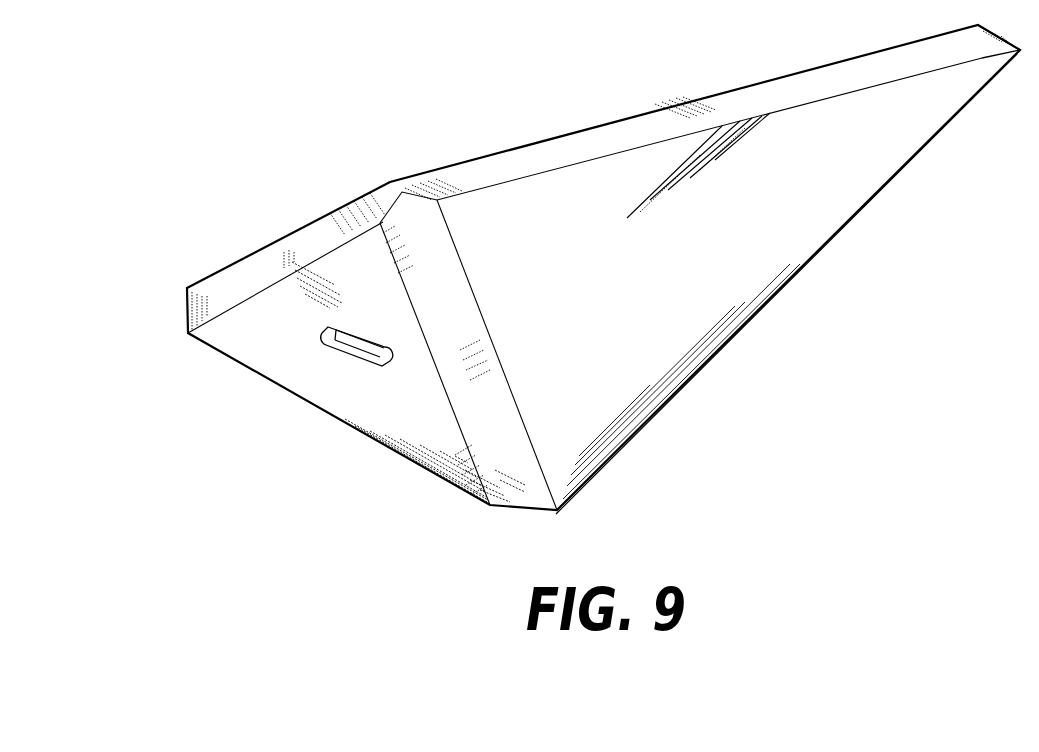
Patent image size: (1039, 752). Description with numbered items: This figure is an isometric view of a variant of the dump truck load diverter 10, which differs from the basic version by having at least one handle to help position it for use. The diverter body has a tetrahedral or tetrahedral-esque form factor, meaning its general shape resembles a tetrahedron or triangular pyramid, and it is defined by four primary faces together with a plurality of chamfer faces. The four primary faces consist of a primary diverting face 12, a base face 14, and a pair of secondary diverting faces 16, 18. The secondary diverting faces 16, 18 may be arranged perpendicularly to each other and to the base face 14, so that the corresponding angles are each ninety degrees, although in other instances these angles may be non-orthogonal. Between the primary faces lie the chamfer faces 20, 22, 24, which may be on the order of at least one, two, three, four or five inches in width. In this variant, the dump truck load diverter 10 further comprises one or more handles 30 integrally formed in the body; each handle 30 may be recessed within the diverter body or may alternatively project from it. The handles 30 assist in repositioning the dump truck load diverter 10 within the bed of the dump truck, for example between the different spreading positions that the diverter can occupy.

The dump truck load diverter 10 is at (369, 116).
The primary diverting face 12 is at (603, 267).
The base face 14 is at (282, 343).
The secondary diverting face 16 is at (724, 255).
The secondary diverting face 18 is at (620, 120).
The chamfer face 20 is at (798, 87).
The chamfer face 22 is at (337, 226).
The chamfer face 24 is at (456, 298).
The handle 30 is at (377, 372).